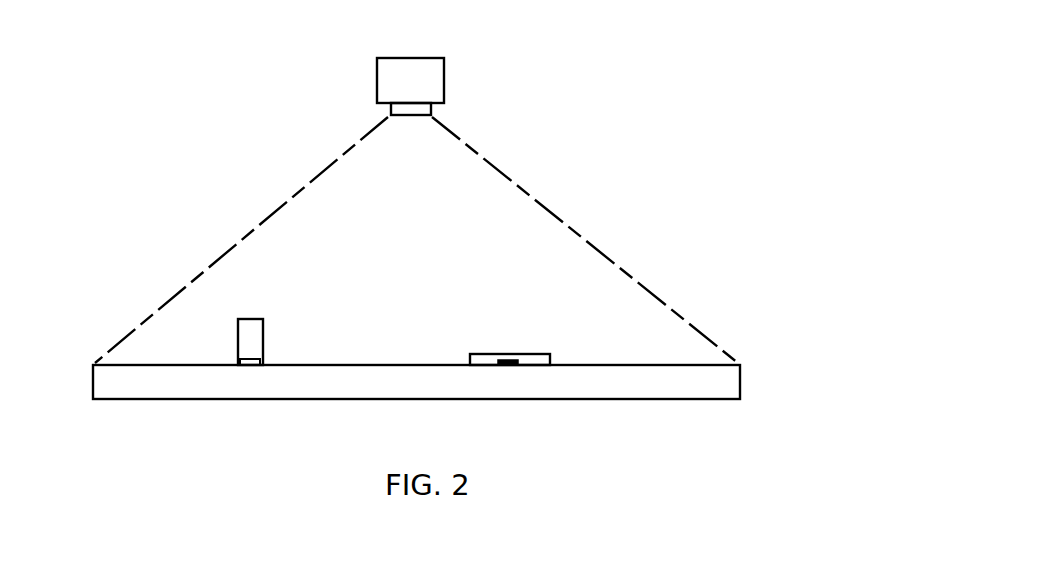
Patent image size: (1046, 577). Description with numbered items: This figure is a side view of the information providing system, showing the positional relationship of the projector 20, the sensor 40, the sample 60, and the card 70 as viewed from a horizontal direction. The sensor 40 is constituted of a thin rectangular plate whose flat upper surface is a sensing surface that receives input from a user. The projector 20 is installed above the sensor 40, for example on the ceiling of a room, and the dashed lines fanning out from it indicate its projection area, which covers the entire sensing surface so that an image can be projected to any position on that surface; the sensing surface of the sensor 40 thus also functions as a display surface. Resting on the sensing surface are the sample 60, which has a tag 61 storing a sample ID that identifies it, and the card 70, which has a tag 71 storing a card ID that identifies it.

The projector 20 is at (444, 81).
The sensor 40 is at (704, 363).
The sample 60 is at (263, 333).
The tag 61 is at (240, 360).
The card 70 is at (522, 353).
The tag 71 is at (498, 360).